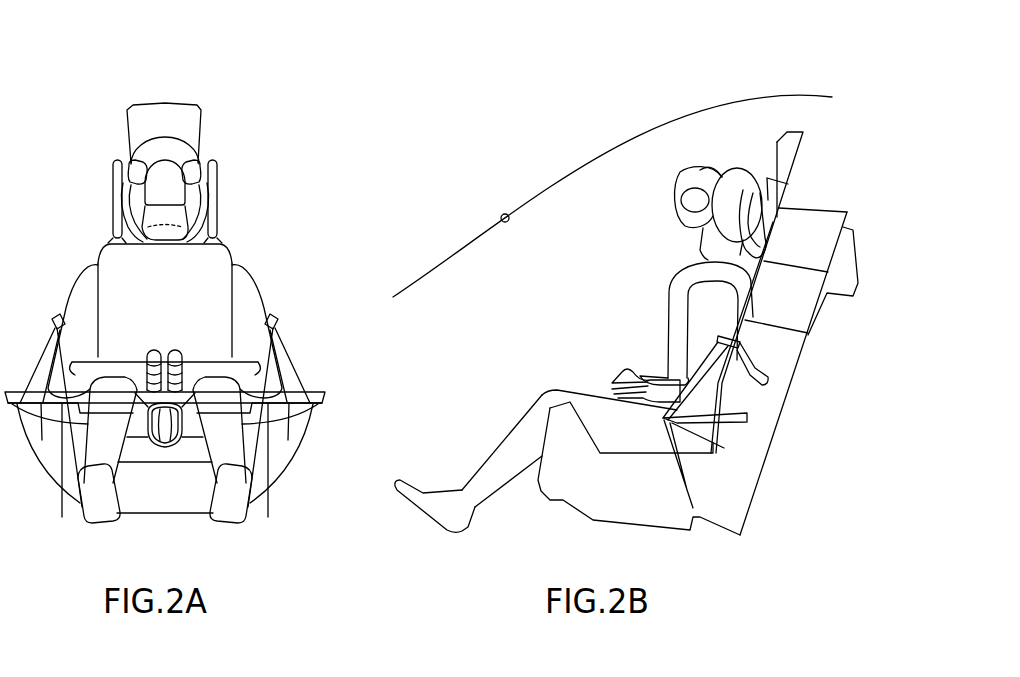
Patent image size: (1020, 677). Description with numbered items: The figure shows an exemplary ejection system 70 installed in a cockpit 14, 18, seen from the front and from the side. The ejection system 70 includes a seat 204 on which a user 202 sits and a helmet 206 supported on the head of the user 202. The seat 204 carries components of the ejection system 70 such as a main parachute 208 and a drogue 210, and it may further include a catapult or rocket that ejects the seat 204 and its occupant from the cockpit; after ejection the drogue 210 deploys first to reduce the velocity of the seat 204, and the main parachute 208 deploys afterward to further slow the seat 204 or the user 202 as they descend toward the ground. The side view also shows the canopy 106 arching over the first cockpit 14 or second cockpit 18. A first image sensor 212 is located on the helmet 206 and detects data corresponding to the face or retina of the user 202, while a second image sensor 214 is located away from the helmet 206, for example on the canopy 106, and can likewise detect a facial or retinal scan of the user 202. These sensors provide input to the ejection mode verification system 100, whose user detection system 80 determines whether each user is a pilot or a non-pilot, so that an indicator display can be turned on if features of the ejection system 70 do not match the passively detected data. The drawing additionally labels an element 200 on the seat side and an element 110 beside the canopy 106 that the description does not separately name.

In FIG. 2A, the first cockpit 14 is at (176, 295).
In FIG. 2B, the first cockpit 14 is at (580, 289).
In FIG. 2A, the second cockpit 18 is at (176, 295).
In FIG. 2B, the second cockpit 18 is at (580, 289).
In FIG. 2A, the ejection system 70 is at (78, 213).
In FIG. 2B, the user detection system 80 is at (649, 176).
In FIG. 2B, the ejection mode verification system 100 is at (731, 333).
In FIG. 2B, the canopy 106 is at (649, 176).
In FIG. 2B, the canopy transparency 110 is at (802, 92).
In FIG. 2B, the seat back 200 is at (807, 333).
In FIG. 2A, the user 202 is at (254, 266).
In FIG. 2B, the user 202 is at (663, 295).
In FIG. 2A, the seat 204 is at (130, 507).
In FIG. 2B, the seat 204 is at (770, 436).
In FIG. 2A, the helmet 206 is at (178, 153).
In FIG. 2B, the helmet 206 is at (738, 176).
In FIG. 2B, the main parachute 208 is at (830, 232).
In FIG. 2B, the drogue 210 is at (848, 275).
In FIG. 2A, the first image sensor 212 is at (194, 171).
In FIG. 2B, the second image sensor 214 is at (507, 223).